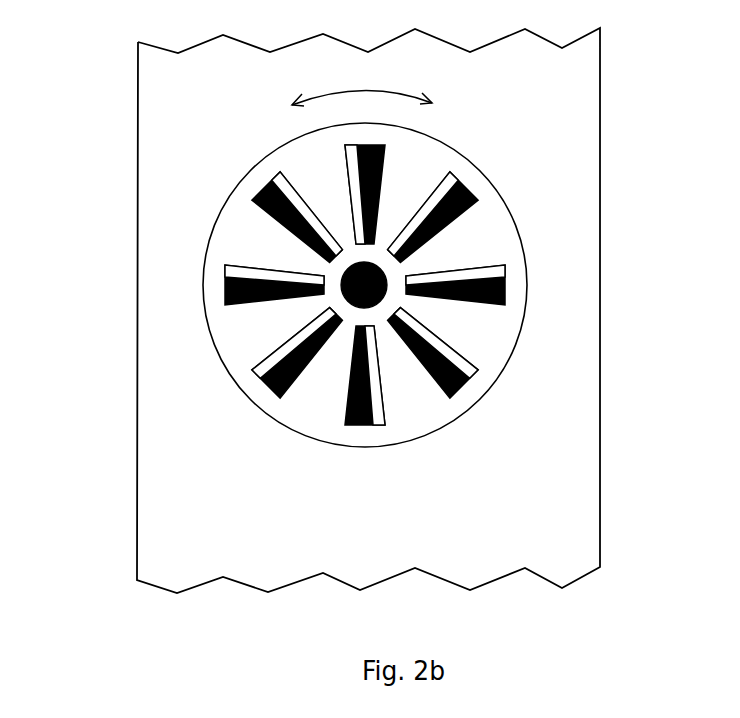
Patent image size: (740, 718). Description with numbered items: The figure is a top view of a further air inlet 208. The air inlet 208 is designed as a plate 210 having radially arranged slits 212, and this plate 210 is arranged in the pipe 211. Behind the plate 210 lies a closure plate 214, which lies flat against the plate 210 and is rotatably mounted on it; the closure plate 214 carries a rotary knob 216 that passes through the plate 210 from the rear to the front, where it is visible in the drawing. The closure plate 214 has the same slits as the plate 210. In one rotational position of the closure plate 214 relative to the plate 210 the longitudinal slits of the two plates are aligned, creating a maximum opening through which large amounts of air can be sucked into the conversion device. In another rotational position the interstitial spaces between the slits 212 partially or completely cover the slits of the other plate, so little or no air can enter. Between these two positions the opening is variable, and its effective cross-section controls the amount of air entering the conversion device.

The air inlet 208 is at (353, 260).
The plate 210 is at (505, 232).
The pipe 211 is at (536, 540).
The slits 212 is at (470, 364).
The closure plate 214 is at (505, 287).
The rotary knob 216 is at (343, 299).